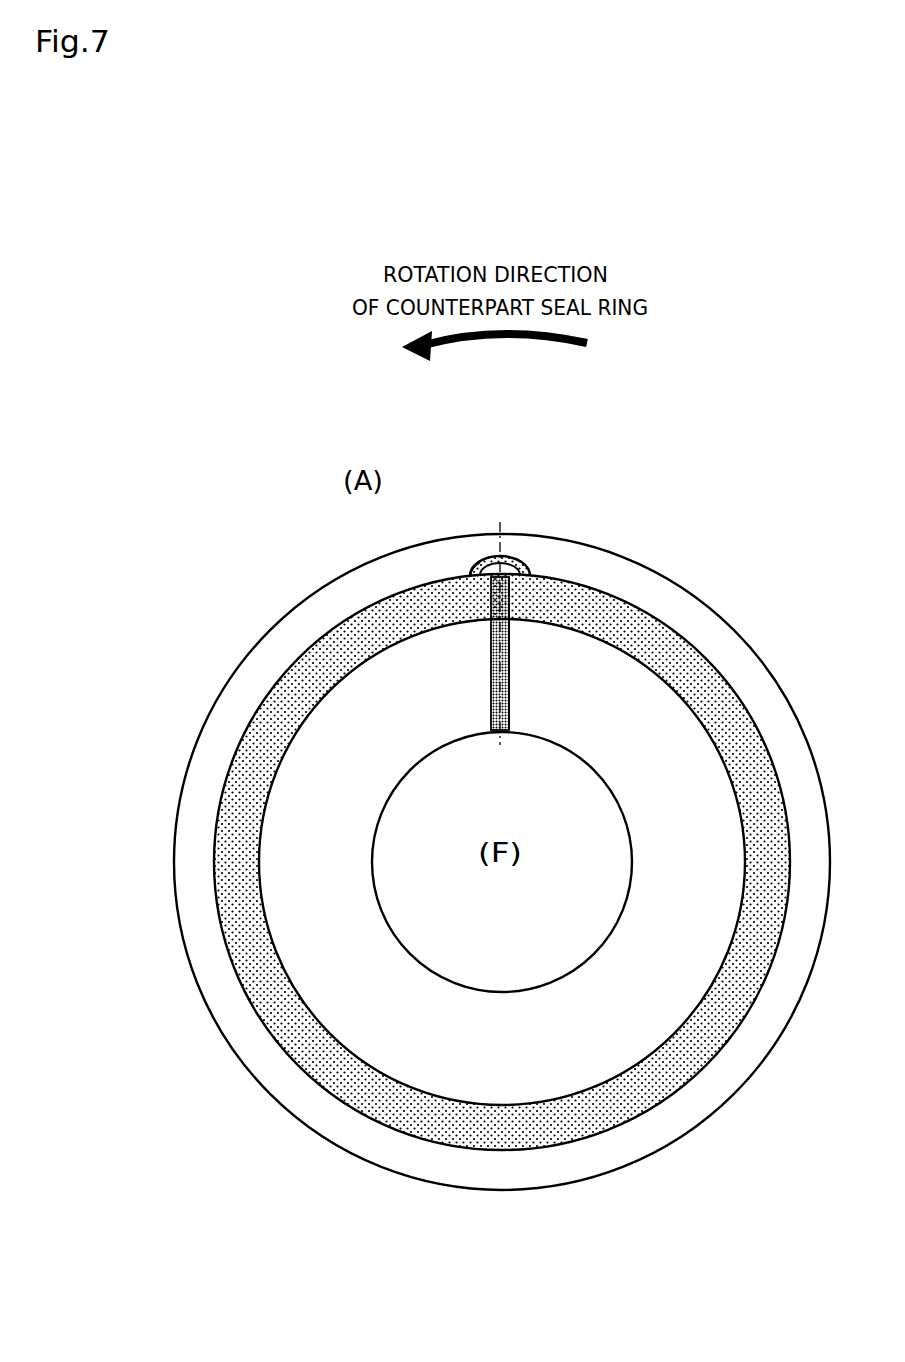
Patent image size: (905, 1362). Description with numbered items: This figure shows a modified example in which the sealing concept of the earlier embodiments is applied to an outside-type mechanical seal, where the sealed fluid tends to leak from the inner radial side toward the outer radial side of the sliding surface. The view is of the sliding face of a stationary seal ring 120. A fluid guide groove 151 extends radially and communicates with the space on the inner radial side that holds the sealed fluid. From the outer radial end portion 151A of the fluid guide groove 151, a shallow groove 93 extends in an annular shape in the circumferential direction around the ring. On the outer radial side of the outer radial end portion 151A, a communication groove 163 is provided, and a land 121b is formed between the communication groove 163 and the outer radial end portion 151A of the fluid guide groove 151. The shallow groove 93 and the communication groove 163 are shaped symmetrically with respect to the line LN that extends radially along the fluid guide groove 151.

The stationary seal ring 120 is at (615, 548).
The shallow groove 93 is at (683, 650).
The communication groove 163 is at (521, 566).
The land 121b is at (489, 563).
The fluid guide groove 151 is at (483, 645).
The outer radial end portion 151A is at (512, 600).
The line LN is at (500, 620).